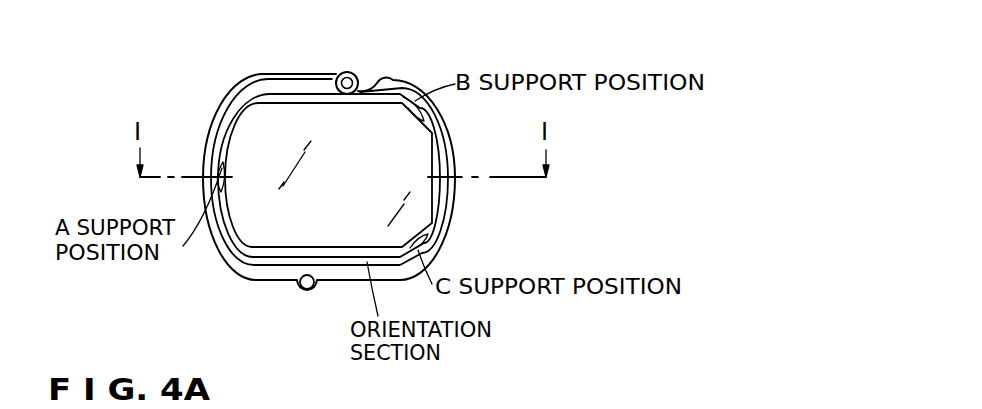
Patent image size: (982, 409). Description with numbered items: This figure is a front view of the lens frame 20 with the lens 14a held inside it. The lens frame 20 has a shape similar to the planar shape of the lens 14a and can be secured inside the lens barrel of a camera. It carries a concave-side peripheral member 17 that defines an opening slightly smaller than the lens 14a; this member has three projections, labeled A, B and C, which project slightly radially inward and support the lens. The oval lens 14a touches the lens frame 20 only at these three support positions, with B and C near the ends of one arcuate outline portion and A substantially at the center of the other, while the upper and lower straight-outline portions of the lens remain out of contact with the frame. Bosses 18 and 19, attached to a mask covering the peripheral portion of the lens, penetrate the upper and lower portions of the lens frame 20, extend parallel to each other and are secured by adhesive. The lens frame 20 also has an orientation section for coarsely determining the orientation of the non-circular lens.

The lens frame 20 is at (268, 72).
The concave-side peripheral member 17 is at (316, 86).
The boss 18 is at (357, 73).
The boss 19 is at (299, 289).
The lens 14a is at (437, 130).